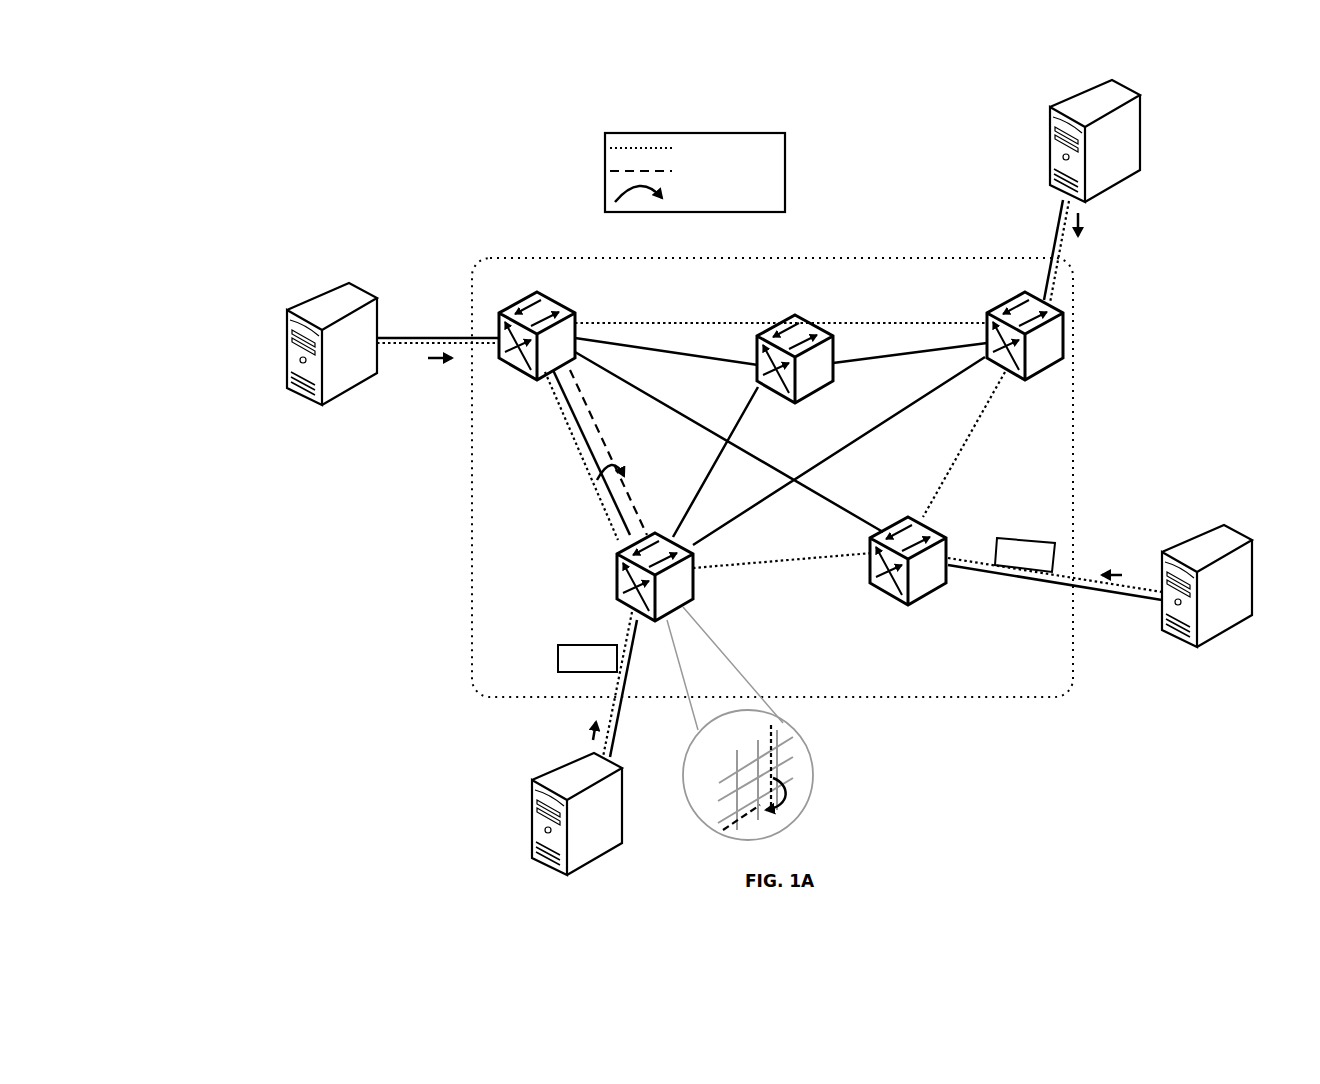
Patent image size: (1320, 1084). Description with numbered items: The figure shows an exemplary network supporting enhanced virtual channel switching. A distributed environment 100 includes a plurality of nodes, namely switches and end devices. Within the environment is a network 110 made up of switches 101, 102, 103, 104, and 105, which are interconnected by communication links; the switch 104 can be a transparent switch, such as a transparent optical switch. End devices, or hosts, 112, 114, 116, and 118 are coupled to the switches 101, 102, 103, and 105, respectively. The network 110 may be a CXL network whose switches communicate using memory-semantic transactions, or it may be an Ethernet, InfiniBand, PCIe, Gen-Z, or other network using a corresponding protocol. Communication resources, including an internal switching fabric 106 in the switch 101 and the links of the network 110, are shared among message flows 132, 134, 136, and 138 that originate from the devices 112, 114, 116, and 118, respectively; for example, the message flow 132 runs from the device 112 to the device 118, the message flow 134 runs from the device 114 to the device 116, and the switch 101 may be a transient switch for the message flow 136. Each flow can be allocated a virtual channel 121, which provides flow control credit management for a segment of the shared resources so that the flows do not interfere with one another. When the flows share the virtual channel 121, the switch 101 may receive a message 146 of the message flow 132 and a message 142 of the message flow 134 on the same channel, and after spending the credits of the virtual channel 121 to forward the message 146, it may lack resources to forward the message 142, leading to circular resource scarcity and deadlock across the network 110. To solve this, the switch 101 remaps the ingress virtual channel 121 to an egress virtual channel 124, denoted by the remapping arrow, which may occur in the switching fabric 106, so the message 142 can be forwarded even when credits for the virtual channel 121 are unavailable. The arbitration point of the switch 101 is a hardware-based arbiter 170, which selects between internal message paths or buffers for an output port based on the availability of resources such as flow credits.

The distributed environment 100 is at (268, 198).
The switch 101 is at (618, 568).
The switch 102 is at (948, 548).
The switch 103 is at (550, 296).
The switch 104 is at (814, 388).
The switch 105 is at (1013, 297).
The internal switching fabric 106 is at (790, 756).
The network 110 is at (1075, 473).
The end device 112 is at (605, 860).
The end device 114 is at (1237, 628).
The end device 116 is at (287, 365).
The end device 118 is at (1050, 152).
The virtual channel 121 is at (573, 442).
The virtual channel 124 is at (600, 441).
The message flow 132 is at (592, 738).
The message flow 134 is at (1120, 572).
The message flow 136 is at (436, 361).
The message flow 138 is at (1081, 216).
The message 142 is at (1040, 568).
The message 146 is at (601, 669).
The arbiter 170 is at (692, 588).